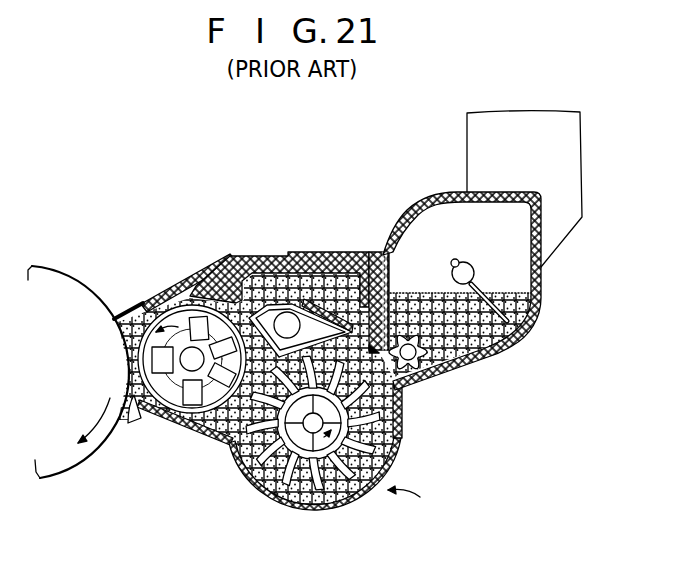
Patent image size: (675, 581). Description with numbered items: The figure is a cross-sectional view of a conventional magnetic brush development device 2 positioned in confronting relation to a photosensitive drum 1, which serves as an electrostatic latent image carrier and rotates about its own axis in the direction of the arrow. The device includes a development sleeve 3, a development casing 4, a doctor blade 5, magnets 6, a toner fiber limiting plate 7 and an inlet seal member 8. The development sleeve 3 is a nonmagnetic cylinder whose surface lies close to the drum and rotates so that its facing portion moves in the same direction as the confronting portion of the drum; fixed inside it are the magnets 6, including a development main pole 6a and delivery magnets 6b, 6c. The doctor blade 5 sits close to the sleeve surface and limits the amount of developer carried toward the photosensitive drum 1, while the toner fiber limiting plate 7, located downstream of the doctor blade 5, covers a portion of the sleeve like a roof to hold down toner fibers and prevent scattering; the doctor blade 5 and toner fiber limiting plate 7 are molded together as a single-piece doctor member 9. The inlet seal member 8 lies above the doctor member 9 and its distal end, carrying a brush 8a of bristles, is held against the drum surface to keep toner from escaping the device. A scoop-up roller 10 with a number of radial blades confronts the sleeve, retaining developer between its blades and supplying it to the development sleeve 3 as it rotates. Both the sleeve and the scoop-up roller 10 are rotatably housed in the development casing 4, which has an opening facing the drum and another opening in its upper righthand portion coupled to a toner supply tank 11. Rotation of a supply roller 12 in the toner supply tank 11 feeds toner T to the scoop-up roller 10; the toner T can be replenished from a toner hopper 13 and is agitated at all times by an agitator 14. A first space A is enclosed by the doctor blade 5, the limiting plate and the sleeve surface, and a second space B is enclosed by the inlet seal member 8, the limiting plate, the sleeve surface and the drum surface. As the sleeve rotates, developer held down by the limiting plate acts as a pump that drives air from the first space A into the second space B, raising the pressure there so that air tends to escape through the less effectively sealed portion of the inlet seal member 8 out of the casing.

The photosensitive drum 1 is at (64, 282).
The magnetic brush development device 2 is at (336, 449).
The development sleeve 3 is at (173, 416).
The development casing 4 is at (283, 503).
The doctor blade 5 is at (238, 283).
The magnets 6 is at (169, 358).
The development main pole 6a is at (152, 362).
The delivery magnet 6b is at (226, 372).
The delivery magnet 6c is at (203, 392).
The toner fiber limiting plate 7 is at (192, 318).
The inlet seal member 8 is at (157, 297).
The brush 8a is at (127, 308).
The doctor member 9 is at (266, 271).
The scoop-up roller 10 is at (347, 483).
The toner supply tank 11 is at (540, 308).
The supply roller 12 is at (423, 364).
The toner hopper 13 is at (575, 170).
The agitator 14 is at (480, 294).
The first space A is at (221, 282).
The second space B is at (132, 327).
The toner T is at (435, 300).